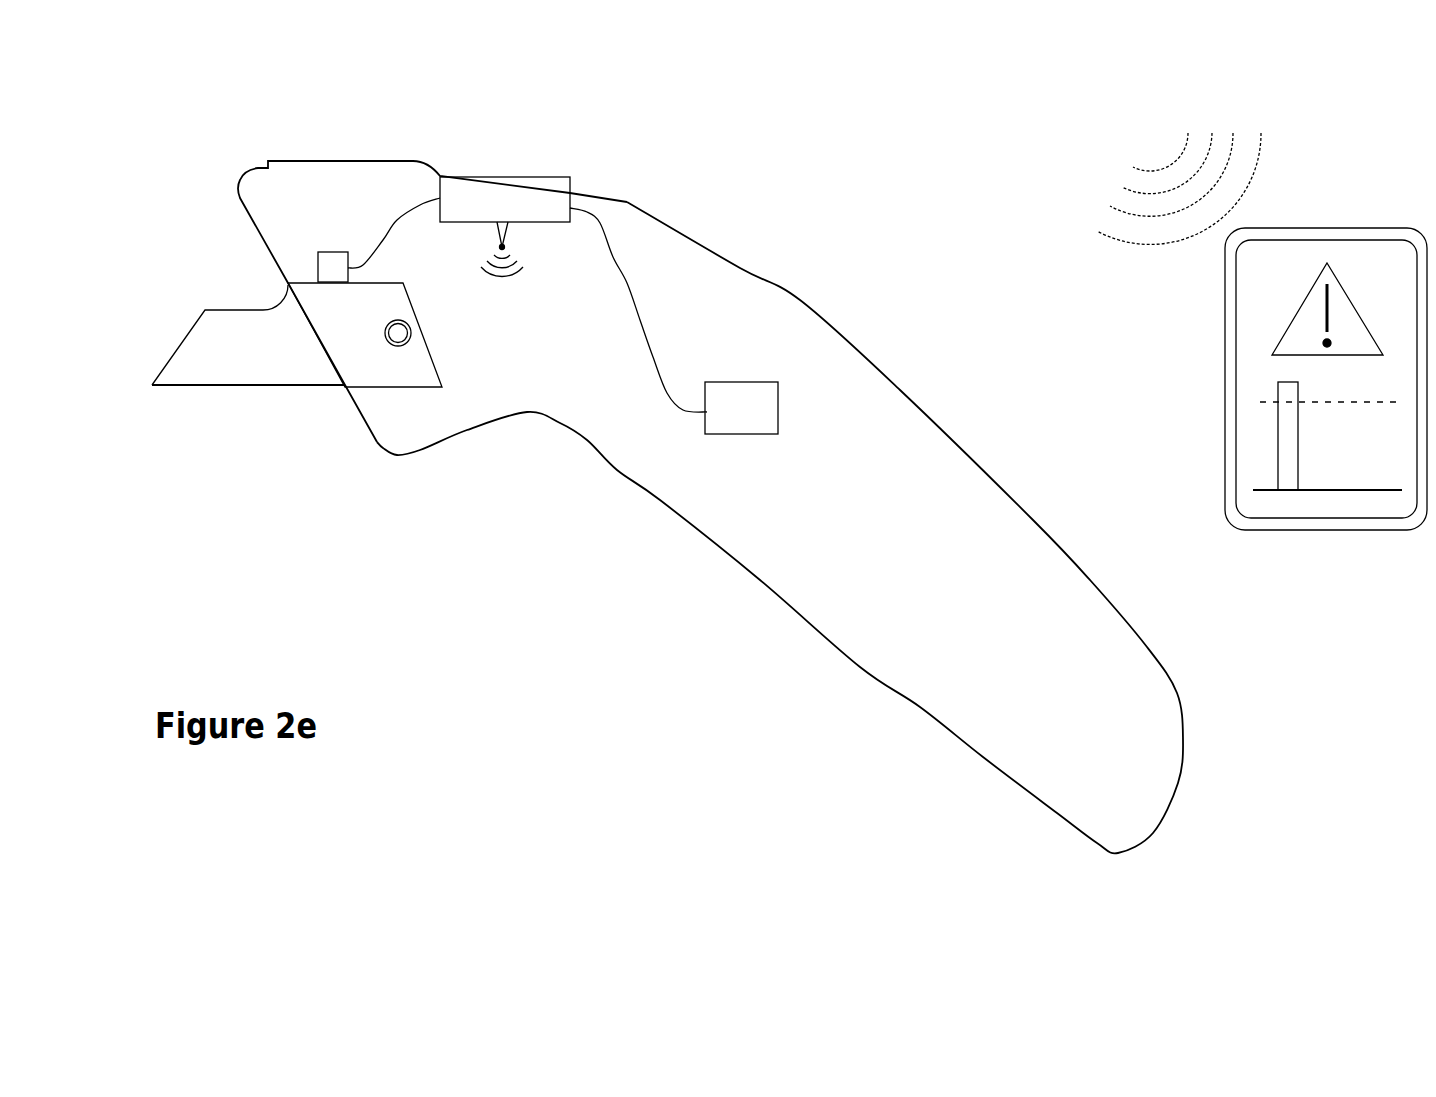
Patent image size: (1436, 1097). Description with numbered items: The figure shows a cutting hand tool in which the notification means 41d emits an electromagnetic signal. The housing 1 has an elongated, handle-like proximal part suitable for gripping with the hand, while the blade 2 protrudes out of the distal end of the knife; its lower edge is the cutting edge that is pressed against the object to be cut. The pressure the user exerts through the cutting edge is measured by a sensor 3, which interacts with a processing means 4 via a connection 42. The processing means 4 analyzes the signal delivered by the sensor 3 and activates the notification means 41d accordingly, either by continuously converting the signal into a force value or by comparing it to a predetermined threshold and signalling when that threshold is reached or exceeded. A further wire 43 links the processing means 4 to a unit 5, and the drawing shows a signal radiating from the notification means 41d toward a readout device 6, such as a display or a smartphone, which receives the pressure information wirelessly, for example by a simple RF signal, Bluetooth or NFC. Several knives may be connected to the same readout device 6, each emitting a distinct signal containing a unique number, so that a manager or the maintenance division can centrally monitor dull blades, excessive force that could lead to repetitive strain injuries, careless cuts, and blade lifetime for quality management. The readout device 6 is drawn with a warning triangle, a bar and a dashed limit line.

The housing 1 is at (890, 455).
The blade 2 is at (233, 338).
The sensor 3 is at (330, 257).
The processing means 4 is at (470, 197).
The notification means 41d is at (505, 232).
The connection 42 is at (395, 222).
The connection line 43 is at (627, 282).
The transmitter 5 is at (712, 422).
The readout device 6 is at (1320, 503).